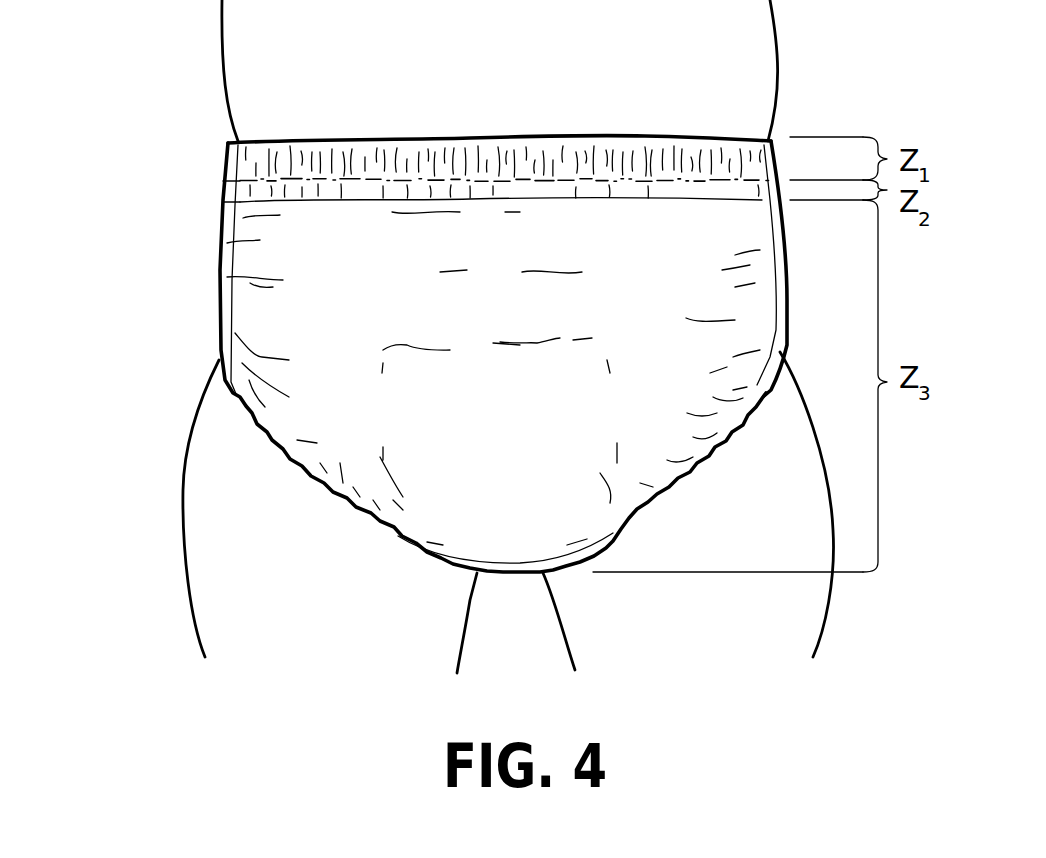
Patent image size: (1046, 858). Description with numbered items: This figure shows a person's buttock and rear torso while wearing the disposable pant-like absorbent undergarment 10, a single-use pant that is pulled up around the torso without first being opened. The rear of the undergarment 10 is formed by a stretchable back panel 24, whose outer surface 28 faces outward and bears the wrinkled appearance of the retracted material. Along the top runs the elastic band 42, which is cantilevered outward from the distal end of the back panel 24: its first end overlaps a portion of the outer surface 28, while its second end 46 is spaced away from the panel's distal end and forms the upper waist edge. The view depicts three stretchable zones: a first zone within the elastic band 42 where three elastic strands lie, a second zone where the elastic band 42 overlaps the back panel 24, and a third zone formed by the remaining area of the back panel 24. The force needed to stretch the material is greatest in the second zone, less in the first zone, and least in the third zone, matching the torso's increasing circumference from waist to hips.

The disposable pant-like absorbent undergarment 10 is at (160, 165).
The stretchable back panel 24 is at (245, 304).
The outer surface 28 is at (501, 378).
The elastic band 42 is at (318, 155).
The second end 46 is at (547, 147).